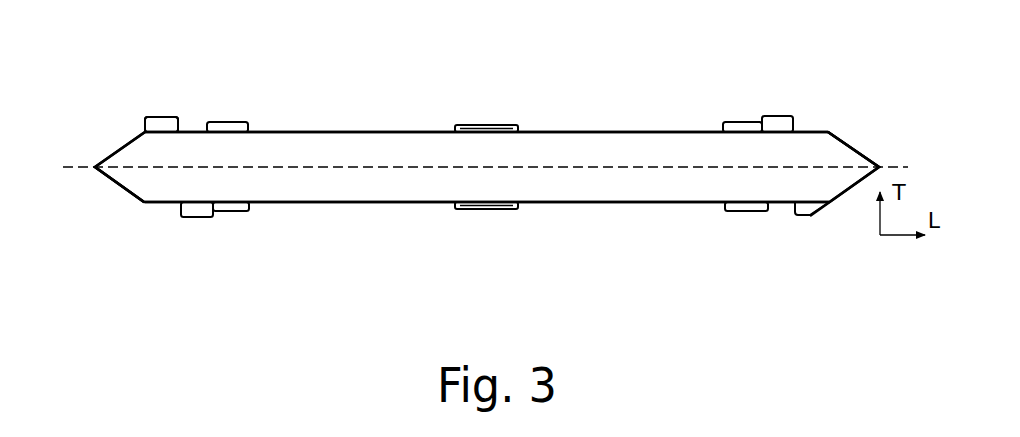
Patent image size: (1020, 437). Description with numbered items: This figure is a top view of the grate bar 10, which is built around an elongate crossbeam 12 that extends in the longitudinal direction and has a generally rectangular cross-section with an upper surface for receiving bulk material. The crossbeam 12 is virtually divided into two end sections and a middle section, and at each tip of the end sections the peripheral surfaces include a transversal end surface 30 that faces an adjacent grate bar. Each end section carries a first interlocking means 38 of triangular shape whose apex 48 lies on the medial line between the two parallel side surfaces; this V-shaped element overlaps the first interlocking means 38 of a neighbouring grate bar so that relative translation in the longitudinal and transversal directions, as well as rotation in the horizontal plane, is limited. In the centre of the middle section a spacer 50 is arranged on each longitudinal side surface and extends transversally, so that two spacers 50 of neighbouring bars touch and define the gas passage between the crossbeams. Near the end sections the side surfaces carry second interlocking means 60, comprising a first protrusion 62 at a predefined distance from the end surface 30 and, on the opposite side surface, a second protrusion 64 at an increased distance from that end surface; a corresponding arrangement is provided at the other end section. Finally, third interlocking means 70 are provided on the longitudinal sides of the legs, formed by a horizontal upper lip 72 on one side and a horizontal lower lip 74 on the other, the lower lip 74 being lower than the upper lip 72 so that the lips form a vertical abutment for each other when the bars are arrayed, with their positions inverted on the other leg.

The grate bar 10 is at (578, 88).
The crossbeam 12 is at (372, 196).
The transversal end surface 30 is at (112, 188).
The first interlocking means 38 is at (101, 153).
The apex 48 is at (880, 165).
The spacer 50 is at (490, 124).
The second interlocking means 60 is at (134, 103).
The first protrusion 62 is at (165, 123).
The second protrusion 64 is at (773, 116).
The third interlocking means 70 is at (294, 81).
The upper lip 72 is at (740, 122).
The lower lip 74 is at (230, 123).